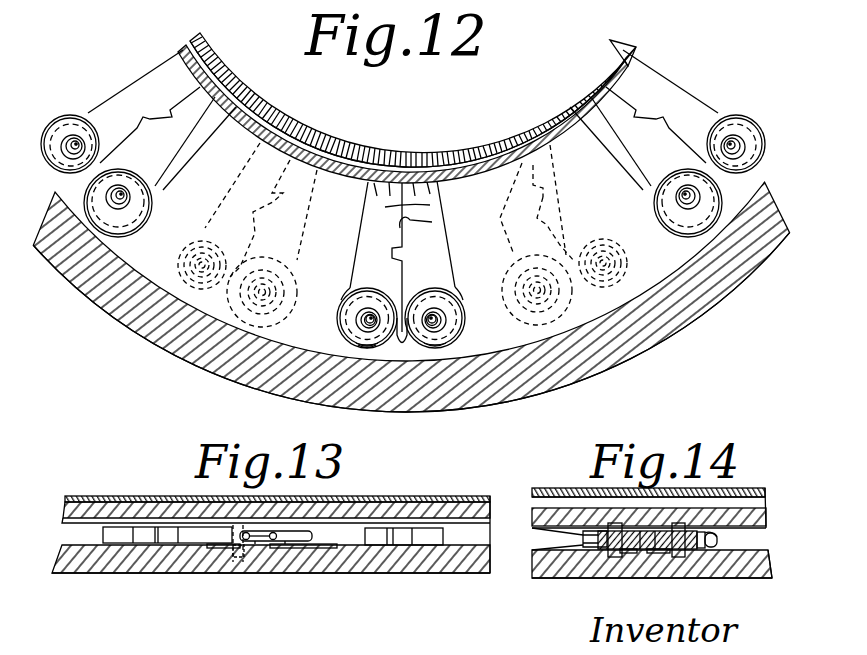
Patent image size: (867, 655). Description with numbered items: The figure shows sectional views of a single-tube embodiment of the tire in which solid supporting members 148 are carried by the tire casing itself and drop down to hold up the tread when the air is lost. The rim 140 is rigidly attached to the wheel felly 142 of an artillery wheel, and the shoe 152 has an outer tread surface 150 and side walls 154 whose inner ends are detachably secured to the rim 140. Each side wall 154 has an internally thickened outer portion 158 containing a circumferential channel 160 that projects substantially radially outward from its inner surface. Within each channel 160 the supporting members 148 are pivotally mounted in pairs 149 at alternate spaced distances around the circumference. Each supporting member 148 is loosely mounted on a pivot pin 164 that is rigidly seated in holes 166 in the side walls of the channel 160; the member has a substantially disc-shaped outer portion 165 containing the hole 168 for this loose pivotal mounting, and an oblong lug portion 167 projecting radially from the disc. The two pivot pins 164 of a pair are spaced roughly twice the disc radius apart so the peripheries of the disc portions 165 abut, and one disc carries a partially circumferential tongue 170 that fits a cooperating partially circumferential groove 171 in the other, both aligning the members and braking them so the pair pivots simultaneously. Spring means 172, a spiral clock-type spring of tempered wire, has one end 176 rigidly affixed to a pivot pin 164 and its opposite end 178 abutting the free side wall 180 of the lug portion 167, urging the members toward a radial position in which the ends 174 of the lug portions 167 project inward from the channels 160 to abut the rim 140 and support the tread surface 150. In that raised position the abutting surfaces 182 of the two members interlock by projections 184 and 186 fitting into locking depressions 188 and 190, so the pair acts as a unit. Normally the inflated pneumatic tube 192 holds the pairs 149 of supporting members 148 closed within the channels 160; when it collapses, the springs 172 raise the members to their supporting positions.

In FIG. 12, the rim 140 is at (605, 70).
In FIG. 12, the wheel felly 142 is at (612, 48).
In FIG. 12, the supporting member 148 is at (376, 194).
In FIG. 12, the pair of supporting members 149 is at (390, 196).
In FIG. 12, the tread surface 150 is at (658, 342).
In FIG. 13, the shoe 152 is at (415, 566).
In FIG. 14, the shoe 152 is at (557, 567).
In FIG. 13, the side walls 154 is at (195, 570).
In FIG. 14, the side walls 154 is at (588, 562).
In FIG. 13, the thickened outer portions 158 is at (108, 508).
In FIG. 14, the thickened outer portions 158 is at (553, 517).
In FIG. 12, the circumferential channel 160 is at (600, 373).
In FIG. 13, the circumferential channel 160 is at (83, 542).
In FIG. 14, the circumferential channel 160 is at (540, 552).
In FIG. 12, the pivot pin 164 is at (366, 346).
In FIG. 13, the pivot pin 164 is at (238, 558).
In FIG. 14, the pivot pin 164 is at (680, 560).
In FIG. 12, the outer portion 165 is at (367, 348).
In FIG. 13, the outer portion 165 is at (280, 531).
In FIG. 14, the outer portion 165 is at (680, 545).
In FIG. 13, the holes 166 is at (243, 562).
In FIG. 14, the holes 166 is at (655, 562).
In FIG. 12, the lug portion 167 is at (385, 207).
In FIG. 13, the hole 168 is at (255, 560).
In FIG. 14, the hole 168 is at (615, 560).
In FIG. 12, the partially circumferential tongue 170 is at (458, 300).
In FIG. 13, the partially circumferential tongue 170 is at (278, 548).
In FIG. 14, the partially circumferential tongue 170 is at (716, 539).
In FIG. 12, the partially circumferential groove 171 is at (346, 300).
In FIG. 13, the partially circumferential groove 171 is at (247, 532).
In FIG. 14, the partially circumferential groove 171 is at (587, 533).
In FIG. 12, the spring means 172 is at (360, 319).
In FIG. 13, the spring means 172 is at (222, 546).
In FIG. 14, the spring means 172 is at (700, 558).
In FIG. 12, the ends of the lug portions 174 is at (386, 190).
In FIG. 13, the ends of the lug portions 174 is at (106, 532).
In FIG. 12, the spring end 176 is at (365, 318).
In FIG. 12, the opposite spring end 178 is at (350, 290).
In FIG. 14, the opposite spring end 178 is at (720, 536).
In FIG. 12, the free side wall 180 is at (354, 280).
In FIG. 14, the free side wall 180 is at (565, 541).
In FIG. 12, the abutting surfaces 182 is at (430, 224).
In FIG. 14, the abutting surfaces 182 is at (642, 540).
In FIG. 12, the projection 184 is at (570, 178).
In FIG. 12, the projection 186 is at (545, 200).
In FIG. 12, the locking depression 188 is at (538, 222).
In FIG. 12, the locking depression 190 is at (545, 195).
In FIG. 13, the pneumatic tube 192 is at (400, 496).
In FIG. 14, the pneumatic tube 192 is at (558, 492).